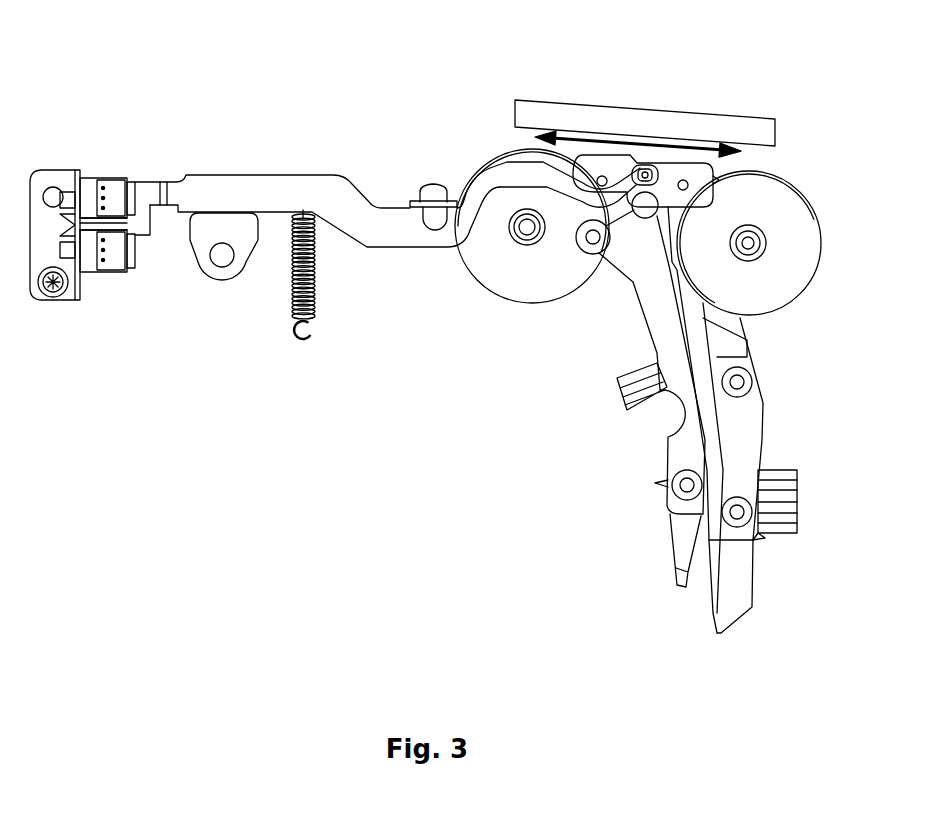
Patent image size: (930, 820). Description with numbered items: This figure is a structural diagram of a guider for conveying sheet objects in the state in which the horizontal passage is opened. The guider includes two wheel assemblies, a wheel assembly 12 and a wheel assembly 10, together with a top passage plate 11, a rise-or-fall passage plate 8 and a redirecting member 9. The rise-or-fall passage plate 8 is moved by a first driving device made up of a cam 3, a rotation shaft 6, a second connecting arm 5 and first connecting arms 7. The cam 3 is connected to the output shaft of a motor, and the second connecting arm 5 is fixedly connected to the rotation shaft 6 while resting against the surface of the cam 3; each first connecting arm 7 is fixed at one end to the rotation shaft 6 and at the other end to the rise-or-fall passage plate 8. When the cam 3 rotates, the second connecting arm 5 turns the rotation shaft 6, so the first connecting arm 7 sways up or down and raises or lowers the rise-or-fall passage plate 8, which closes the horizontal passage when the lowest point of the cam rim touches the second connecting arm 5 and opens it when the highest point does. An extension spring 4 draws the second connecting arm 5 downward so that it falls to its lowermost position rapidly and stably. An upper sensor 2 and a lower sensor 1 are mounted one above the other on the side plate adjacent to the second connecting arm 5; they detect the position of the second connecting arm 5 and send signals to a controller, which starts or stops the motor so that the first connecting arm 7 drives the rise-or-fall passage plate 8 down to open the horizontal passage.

The lower sensor 1 is at (120, 252).
The upper sensor 2 is at (112, 200).
The cam 3 is at (205, 240).
The extension spring 4 is at (296, 235).
The second connecting arm 5 is at (237, 185).
The rotation shaft 6 is at (437, 215).
The first connecting arm 7 is at (527, 173).
The rise-or-fall passage plate 8 is at (598, 172).
The redirecting member 9 is at (650, 215).
The wheel assembly 10 is at (767, 193).
The top passage plate 11 is at (653, 125).
The wheel assembly 12 is at (477, 180).